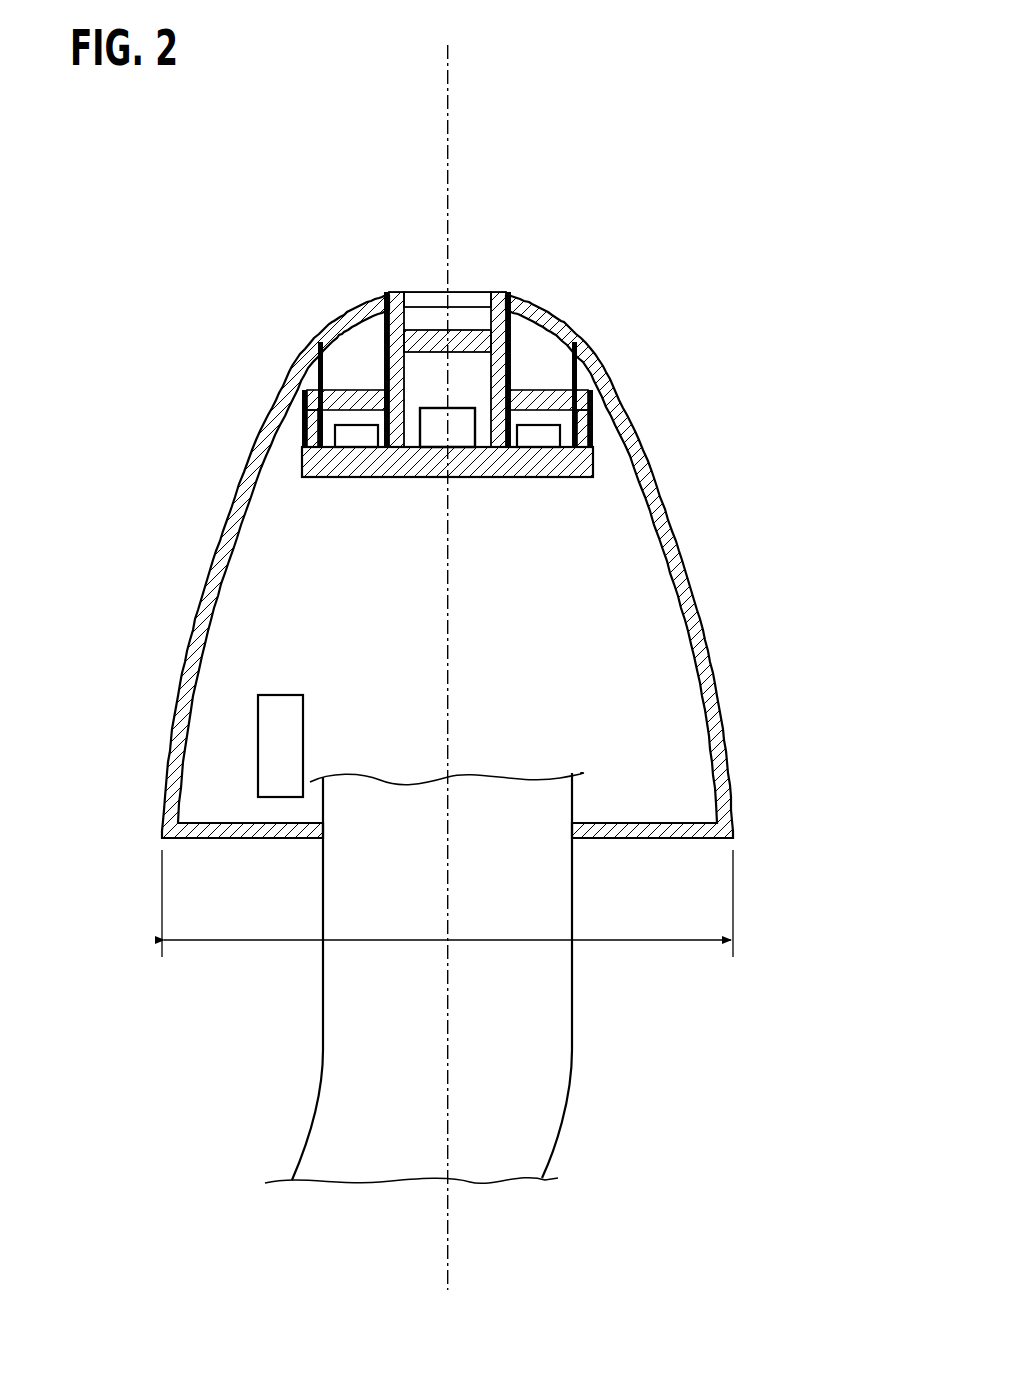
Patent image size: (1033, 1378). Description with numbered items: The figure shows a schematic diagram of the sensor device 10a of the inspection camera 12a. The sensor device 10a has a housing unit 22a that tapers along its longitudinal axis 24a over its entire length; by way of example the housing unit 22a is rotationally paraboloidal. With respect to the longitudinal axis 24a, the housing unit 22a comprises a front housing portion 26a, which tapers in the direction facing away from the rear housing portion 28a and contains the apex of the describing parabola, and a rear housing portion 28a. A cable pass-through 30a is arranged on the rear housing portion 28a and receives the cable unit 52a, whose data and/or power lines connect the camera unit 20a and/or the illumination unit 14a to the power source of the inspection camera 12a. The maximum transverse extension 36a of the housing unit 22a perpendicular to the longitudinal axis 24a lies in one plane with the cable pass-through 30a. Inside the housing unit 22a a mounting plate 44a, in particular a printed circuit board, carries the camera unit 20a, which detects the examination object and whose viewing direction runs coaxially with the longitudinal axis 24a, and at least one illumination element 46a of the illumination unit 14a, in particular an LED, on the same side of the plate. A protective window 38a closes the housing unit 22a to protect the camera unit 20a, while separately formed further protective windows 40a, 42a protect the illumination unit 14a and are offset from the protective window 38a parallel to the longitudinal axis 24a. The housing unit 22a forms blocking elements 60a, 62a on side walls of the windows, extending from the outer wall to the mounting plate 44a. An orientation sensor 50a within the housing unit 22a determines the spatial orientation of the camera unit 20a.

The sensor device 10a is at (437, 669).
The inspection camera 12a is at (390, 978).
The illumination unit 14a is at (643, 369).
The camera unit 20a is at (437, 427).
The housing unit 22a is at (195, 673).
The longitudinal axis 24a is at (448, 75).
The front housing portion 26a is at (490, 340).
The rear housing portion 28a is at (673, 840).
The cable pass-through 30a is at (562, 842).
The maximum transverse extension 36a is at (500, 940).
The protective window 38a is at (510, 347).
The further protective window 40a is at (577, 430).
The further protective window 42a is at (320, 398).
The mounting plate 44a is at (580, 465).
The illumination element 46a is at (550, 432).
The orientation sensor 50a is at (280, 748).
The cable unit 52a is at (323, 1030).
The blocking element 60a is at (383, 368).
The blocking element 62a is at (512, 372).